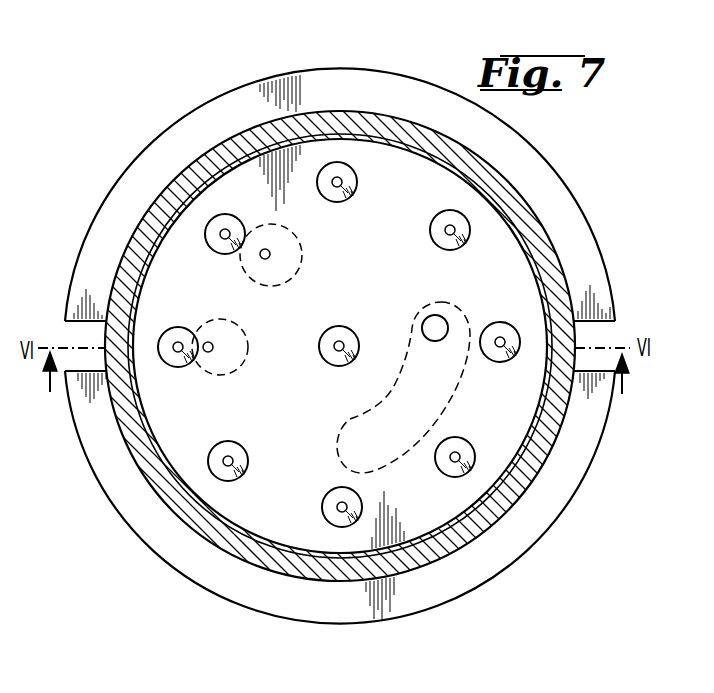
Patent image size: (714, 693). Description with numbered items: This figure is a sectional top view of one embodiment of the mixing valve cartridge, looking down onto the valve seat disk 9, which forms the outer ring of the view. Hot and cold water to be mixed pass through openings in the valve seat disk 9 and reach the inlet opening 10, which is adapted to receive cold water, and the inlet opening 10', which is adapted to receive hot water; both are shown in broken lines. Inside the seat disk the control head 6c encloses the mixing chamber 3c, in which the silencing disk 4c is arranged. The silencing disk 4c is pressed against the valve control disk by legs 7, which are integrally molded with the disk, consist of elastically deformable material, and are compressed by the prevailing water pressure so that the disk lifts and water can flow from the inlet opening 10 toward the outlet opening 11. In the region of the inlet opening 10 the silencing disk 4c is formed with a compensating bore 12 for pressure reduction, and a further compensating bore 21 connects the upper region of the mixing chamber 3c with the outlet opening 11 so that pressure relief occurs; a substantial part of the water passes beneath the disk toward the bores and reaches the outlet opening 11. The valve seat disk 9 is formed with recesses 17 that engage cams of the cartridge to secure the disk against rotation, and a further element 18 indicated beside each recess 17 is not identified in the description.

The valve seat disk 9 is at (353, 59).
The control head 6c is at (371, 105).
The silencing disk 4c is at (405, 132).
The mixing chamber 3c is at (403, 190).
The legs 7 is at (236, 225).
The inlet opening 10 is at (239, 344).
The inlet opening 10' is at (292, 259).
The compensating bore 12 is at (210, 343).
The compensating bore 21 is at (425, 320).
The outlet opening 11 is at (347, 430).
The recesses 17 is at (72, 336).
The recess 18 is at (110, 305).